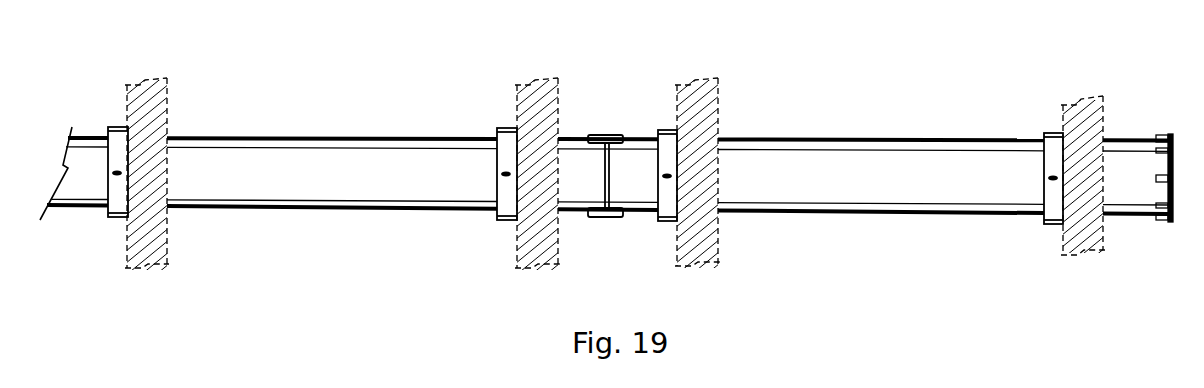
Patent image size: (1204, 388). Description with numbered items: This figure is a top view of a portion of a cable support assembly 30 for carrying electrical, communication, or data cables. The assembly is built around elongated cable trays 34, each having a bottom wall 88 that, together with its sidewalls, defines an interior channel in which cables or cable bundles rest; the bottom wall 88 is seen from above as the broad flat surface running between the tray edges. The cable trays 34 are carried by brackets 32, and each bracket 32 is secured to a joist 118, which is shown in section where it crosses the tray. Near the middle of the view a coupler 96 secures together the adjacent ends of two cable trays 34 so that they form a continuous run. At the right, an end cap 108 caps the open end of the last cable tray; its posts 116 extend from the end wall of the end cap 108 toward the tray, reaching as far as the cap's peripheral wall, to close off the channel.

The cable support assembly 30 is at (902, 278).
The bracket 32 is at (117, 125).
The cable tray 34 is at (604, 137).
The bottom wall 88 is at (322, 182).
The coupler 96 is at (607, 133).
The end cap 108 is at (1168, 137).
The post 116 is at (1160, 178).
The joist 118 is at (152, 250).